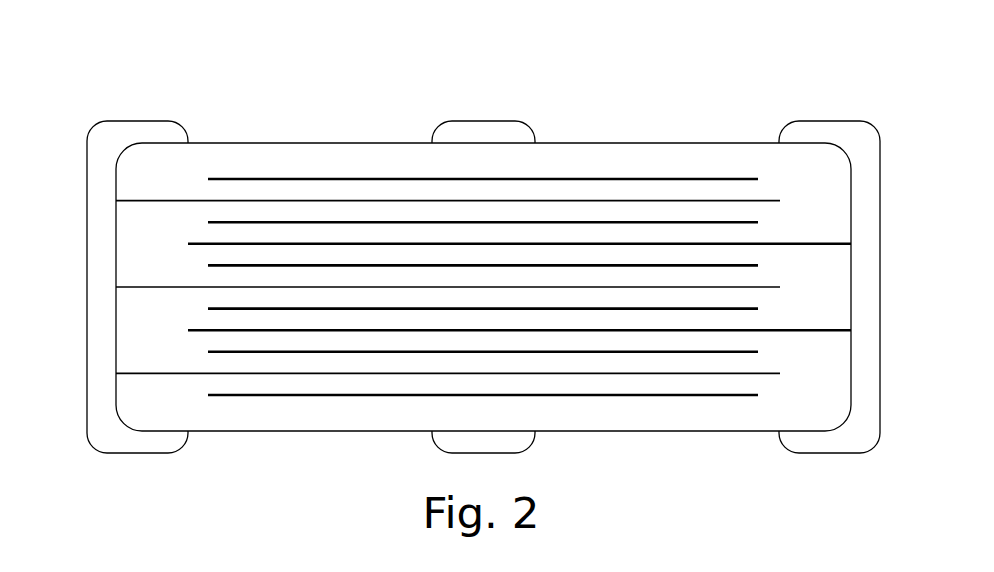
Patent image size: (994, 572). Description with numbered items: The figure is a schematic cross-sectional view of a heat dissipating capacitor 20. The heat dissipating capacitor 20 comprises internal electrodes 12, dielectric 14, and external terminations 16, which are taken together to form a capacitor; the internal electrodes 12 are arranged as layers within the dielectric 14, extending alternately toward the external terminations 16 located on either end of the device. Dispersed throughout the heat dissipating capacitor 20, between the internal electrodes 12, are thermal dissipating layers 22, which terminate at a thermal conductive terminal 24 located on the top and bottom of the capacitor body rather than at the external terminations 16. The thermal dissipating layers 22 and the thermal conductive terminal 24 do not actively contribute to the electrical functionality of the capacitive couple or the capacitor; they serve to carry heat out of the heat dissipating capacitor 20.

The internal electrodes 12 is at (150, 201).
The dielectric 14 is at (815, 287).
The external terminations 16 is at (102, 398).
The heat dissipating capacitor 20 is at (761, 134).
The thermal dissipating layers 22 is at (340, 265).
The thermal conductive terminal 24 is at (503, 135).